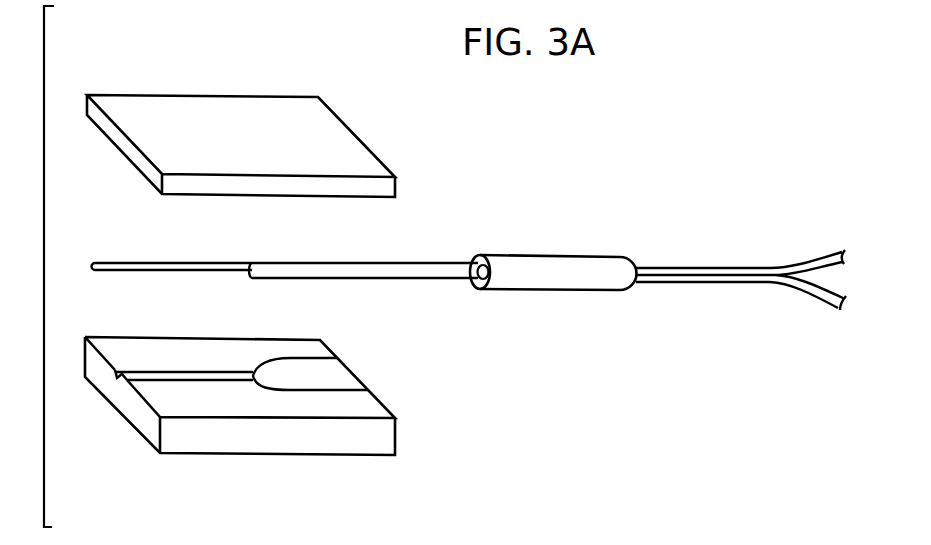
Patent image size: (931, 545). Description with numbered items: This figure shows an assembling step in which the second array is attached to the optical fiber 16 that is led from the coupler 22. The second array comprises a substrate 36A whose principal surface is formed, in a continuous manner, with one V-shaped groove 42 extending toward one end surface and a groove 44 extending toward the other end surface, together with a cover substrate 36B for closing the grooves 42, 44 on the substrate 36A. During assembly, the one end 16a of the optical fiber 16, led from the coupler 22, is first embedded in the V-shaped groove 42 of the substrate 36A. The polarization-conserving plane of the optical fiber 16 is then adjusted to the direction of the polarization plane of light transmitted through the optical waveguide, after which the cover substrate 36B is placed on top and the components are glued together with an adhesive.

The cover substrate 36B is at (326, 124).
The substrate 36A is at (322, 443).
The optical fiber 16 is at (448, 279).
The end of the optical fiber 16a is at (133, 264).
The coupler 22 is at (557, 268).
The V-shaped groove 42 is at (113, 387).
The groove 44 is at (342, 378).